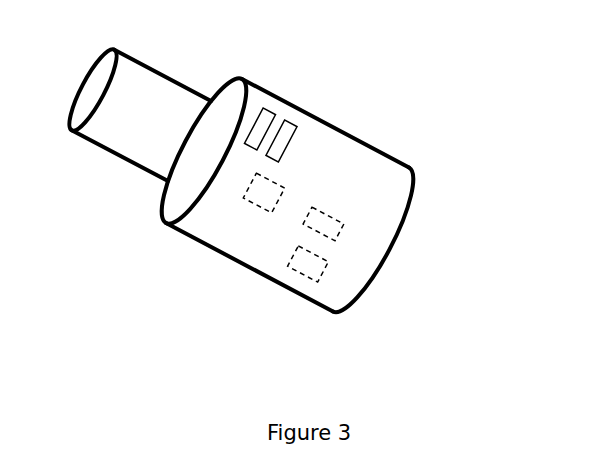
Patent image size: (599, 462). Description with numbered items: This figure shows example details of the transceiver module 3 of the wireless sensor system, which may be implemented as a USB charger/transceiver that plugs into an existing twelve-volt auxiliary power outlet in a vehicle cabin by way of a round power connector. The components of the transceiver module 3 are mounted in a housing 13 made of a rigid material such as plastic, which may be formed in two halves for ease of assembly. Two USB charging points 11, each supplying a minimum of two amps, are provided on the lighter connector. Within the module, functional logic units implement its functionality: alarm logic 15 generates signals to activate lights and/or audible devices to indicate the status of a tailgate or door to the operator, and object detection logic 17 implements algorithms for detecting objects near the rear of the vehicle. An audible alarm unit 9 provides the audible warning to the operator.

The transceiver module 3 is at (260, 87).
The housing 13 is at (232, 82).
The USB charging points 11 is at (268, 108).
The alarm logic 15 is at (275, 183).
The object detection logic 17 is at (336, 213).
The audible alarm unit 9 is at (328, 267).